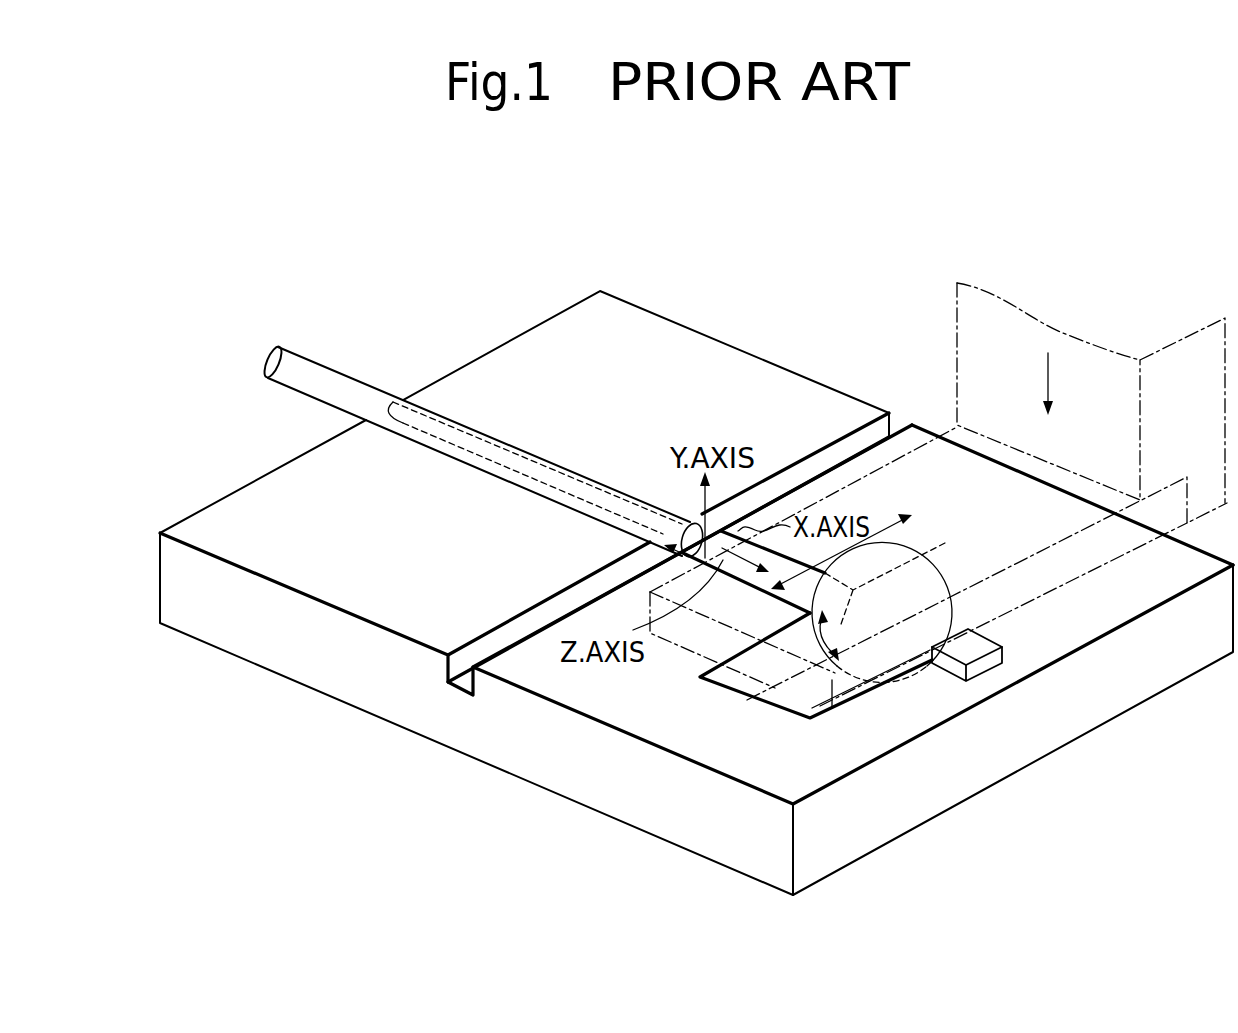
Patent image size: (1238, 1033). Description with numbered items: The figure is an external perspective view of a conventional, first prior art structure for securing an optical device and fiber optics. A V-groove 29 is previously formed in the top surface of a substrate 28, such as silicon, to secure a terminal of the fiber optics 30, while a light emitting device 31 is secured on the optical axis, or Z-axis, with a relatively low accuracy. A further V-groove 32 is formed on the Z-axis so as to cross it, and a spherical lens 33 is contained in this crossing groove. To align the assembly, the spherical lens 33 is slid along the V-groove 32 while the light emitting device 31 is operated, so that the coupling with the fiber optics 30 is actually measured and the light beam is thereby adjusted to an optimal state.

The substrate 28 is at (497, 347).
The V-groove 29 is at (587, 483).
The fiber optics 30 is at (350, 375).
The light emitting device 31 is at (990, 663).
The V-groove 32 is at (740, 686).
The spherical lens 33 is at (940, 570).